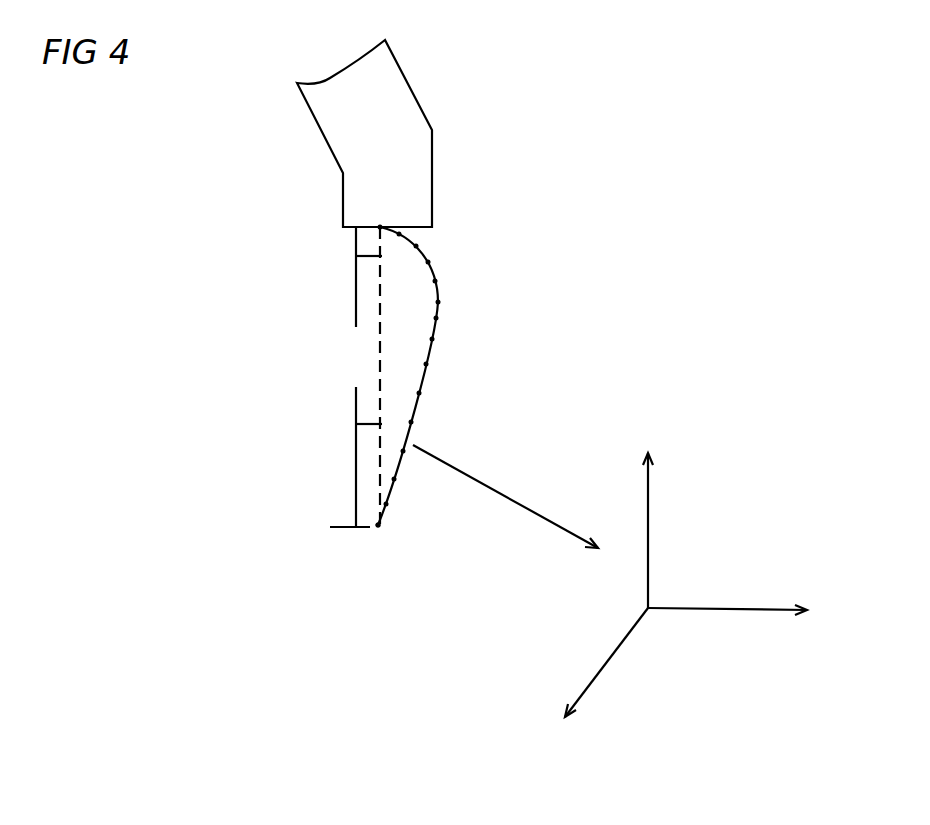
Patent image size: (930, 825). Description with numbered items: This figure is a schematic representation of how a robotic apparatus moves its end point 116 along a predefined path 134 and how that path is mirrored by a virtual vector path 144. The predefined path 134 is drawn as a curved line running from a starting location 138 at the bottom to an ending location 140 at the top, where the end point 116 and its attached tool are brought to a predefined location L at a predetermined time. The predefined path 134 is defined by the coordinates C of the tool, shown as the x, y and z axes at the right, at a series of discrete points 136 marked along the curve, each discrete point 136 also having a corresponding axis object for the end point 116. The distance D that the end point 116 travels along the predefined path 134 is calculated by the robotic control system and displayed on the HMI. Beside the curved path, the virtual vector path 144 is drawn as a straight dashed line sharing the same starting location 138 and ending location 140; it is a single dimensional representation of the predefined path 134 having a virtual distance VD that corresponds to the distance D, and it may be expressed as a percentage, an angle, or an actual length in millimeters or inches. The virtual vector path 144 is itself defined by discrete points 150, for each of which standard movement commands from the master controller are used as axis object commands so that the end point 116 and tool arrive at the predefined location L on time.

The end point 116 is at (432, 222).
The predefined path 134 is at (470, 307).
The discrete points 136 is at (438, 318).
The starting location 138 is at (380, 527).
The ending location 140 is at (380, 224).
The virtual vector path 144 is at (372, 285).
The discrete point 150 is at (356, 256).
The predefined location L is at (442, 207).
The distance D is at (430, 372).
The coordinates C is at (672, 575).
The virtual distance VD is at (349, 377).